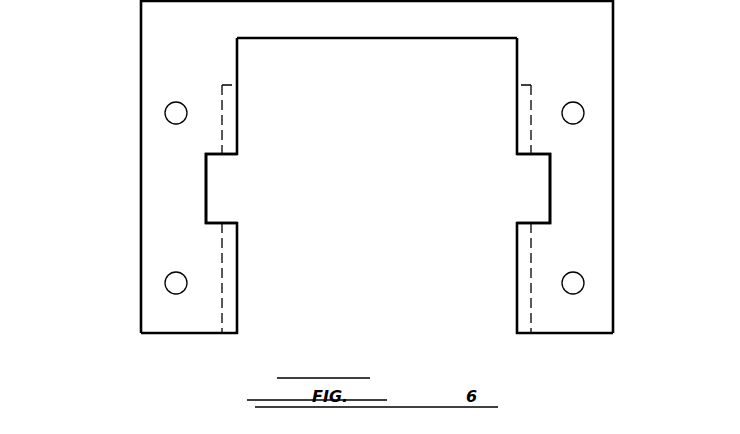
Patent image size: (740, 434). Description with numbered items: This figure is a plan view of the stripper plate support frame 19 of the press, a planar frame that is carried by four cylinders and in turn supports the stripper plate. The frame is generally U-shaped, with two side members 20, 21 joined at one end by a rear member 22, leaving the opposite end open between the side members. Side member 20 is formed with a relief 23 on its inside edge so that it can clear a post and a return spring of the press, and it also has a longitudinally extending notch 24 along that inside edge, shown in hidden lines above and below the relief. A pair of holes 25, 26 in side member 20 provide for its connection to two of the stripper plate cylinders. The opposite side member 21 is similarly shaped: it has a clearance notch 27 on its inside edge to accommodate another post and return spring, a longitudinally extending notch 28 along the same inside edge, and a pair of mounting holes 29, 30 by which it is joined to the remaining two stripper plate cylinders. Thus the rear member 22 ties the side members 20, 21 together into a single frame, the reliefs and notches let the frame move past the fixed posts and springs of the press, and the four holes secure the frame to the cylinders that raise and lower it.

The stripper plate support frame 19 is at (613, 50).
The side member 20 is at (603, 210).
The side member 21 is at (153, 177).
The rear member 22 is at (412, 28).
The relief 23 is at (550, 188).
The longitudinally extending notch 24 is at (521, 115).
The hole 25 is at (584, 281).
The hole 26 is at (584, 113).
The clearance notch 27 is at (206, 190).
The longitudinally extending notch 28 is at (222, 118).
The mounting hole 29 is at (165, 283).
The mounting hole 30 is at (165, 113).